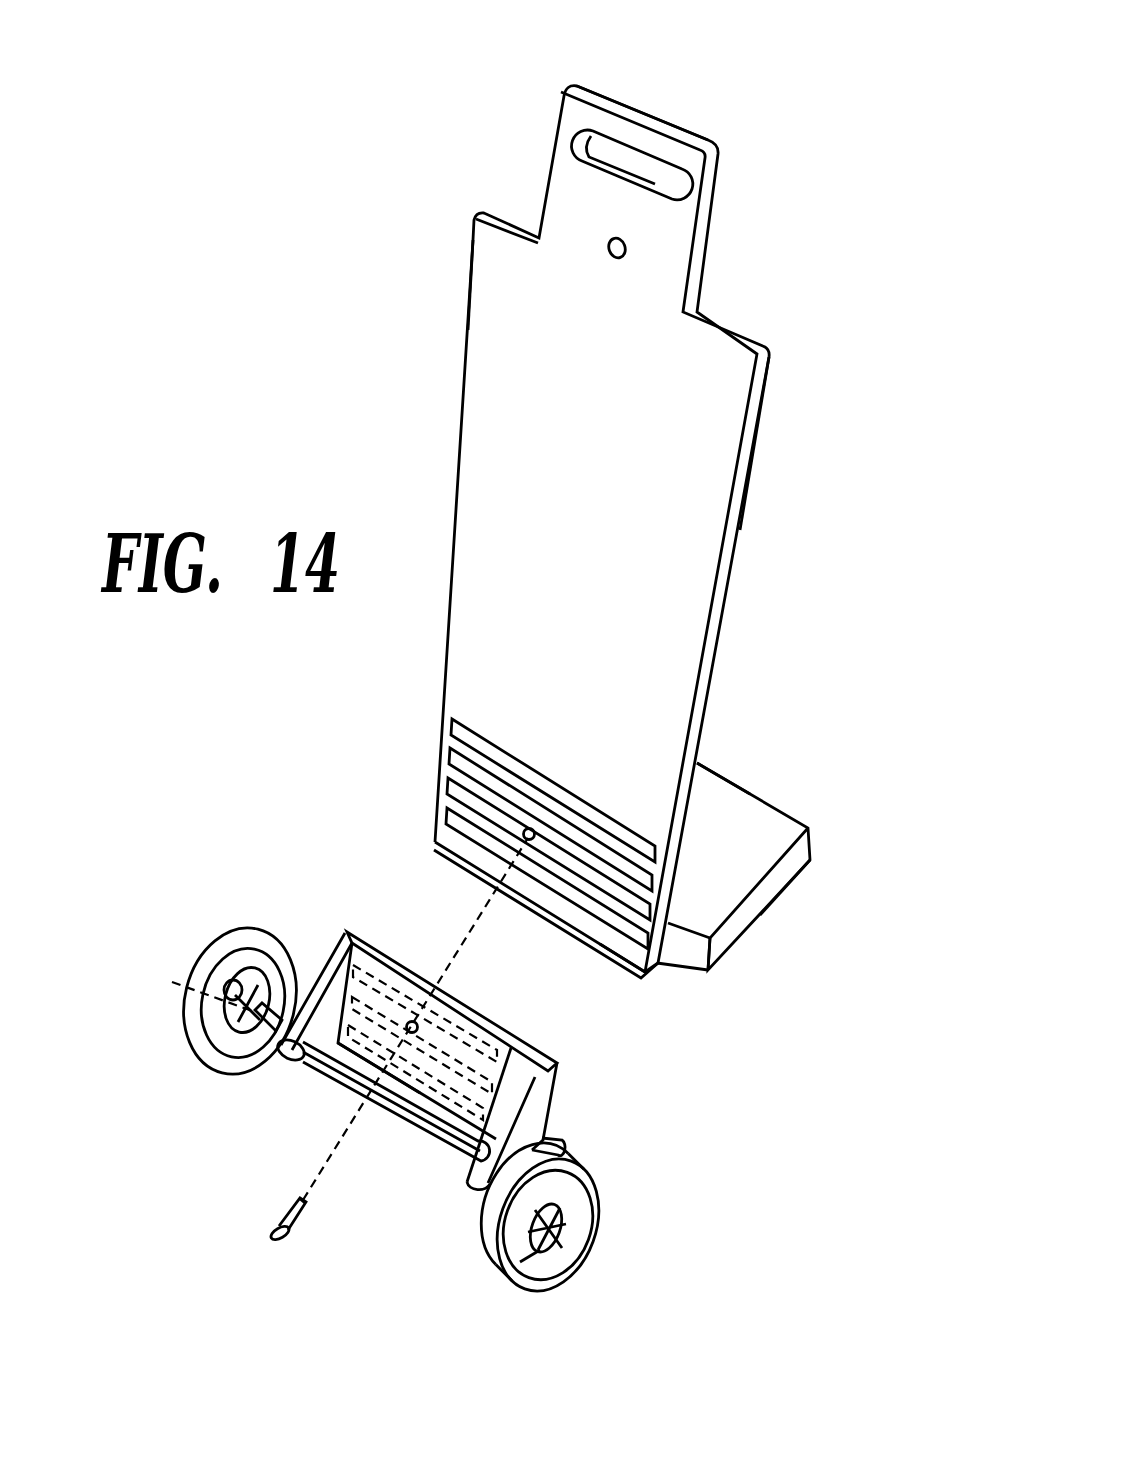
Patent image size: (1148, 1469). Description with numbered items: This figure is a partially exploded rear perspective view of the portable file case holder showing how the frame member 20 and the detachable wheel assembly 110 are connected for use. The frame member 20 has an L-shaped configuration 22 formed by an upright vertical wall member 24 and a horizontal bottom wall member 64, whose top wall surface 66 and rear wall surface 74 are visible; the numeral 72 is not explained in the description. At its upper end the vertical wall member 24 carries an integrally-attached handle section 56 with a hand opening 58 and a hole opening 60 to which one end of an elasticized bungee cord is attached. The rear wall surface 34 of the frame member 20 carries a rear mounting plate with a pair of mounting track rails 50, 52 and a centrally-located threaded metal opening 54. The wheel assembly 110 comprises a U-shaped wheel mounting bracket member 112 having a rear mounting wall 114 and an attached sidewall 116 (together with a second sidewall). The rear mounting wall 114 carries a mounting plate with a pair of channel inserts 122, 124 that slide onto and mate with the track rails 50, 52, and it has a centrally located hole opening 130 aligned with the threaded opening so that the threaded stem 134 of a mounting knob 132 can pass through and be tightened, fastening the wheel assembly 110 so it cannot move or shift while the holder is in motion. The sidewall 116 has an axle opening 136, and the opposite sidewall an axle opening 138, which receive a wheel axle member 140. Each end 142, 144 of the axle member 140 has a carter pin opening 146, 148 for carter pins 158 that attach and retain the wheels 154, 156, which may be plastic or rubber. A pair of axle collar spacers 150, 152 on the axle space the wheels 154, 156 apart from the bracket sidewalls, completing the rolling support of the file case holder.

The frame member 20 is at (773, 440).
The L-shaped configuration 22 is at (673, 970).
The vertical wall member 24 is at (732, 560).
The rear wall surface 34 is at (553, 450).
The mounting track rail 50 is at (473, 740).
The mounting track rail 52 is at (462, 823).
The threaded metal opening 54 is at (528, 841).
The handle section 56 is at (632, 93).
The hand opening 58 is at (636, 158).
The hole opening 60 is at (624, 243).
The horizontal bottom wall member 64 is at (812, 835).
The top wall surface 66 is at (718, 797).
The lower edge of base 72 is at (695, 950).
The rear wall surface 74 is at (750, 902).
The detachable wheel assembly 110 is at (242, 893).
The U-shaped wheel mounting bracket member 112 is at (380, 937).
The rear mounting wall 114 is at (508, 1060).
The sidewall 116 is at (330, 953).
The channel insert 122 is at (455, 1067).
The channel insert 124 is at (410, 1105).
The hole opening 130 is at (413, 1022).
The mounting knob 132 is at (268, 1230).
The threaded stem 134 is at (298, 1204).
The axle opening 136 is at (280, 1054).
The axle opening 138 is at (498, 1180).
The wheel axle member 140 is at (333, 1066).
The end of wheel axle member 142 is at (194, 997).
The end of wheel axle member 144 is at (565, 1227).
The carter pin opening 146 is at (567, 1190).
The carter pin opening 148 is at (262, 963).
The axle collar spacer 150 is at (255, 1016).
The axle collar spacer 152 is at (483, 1197).
The wheel 154 is at (232, 952).
The wheel 156 is at (562, 1155).
The carter pin 158 is at (550, 1243).